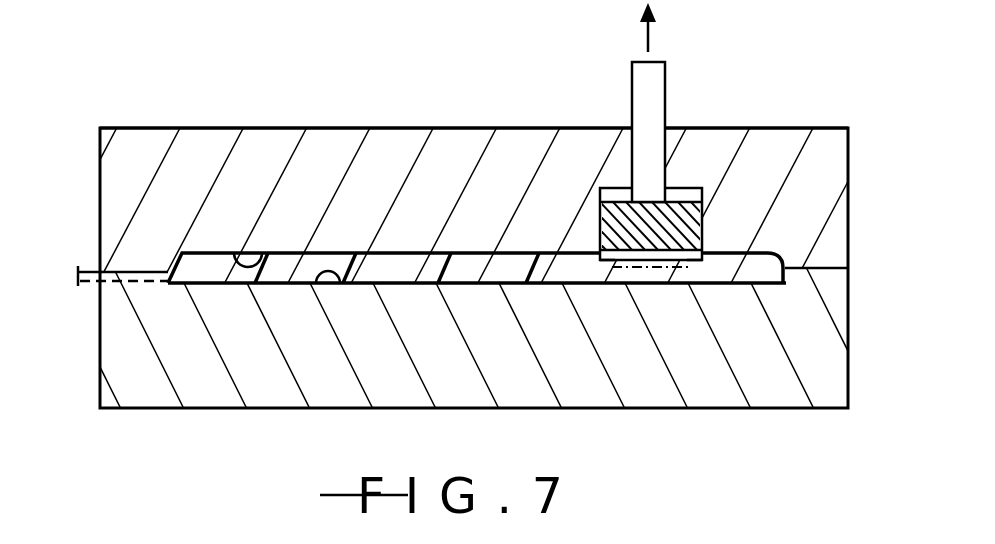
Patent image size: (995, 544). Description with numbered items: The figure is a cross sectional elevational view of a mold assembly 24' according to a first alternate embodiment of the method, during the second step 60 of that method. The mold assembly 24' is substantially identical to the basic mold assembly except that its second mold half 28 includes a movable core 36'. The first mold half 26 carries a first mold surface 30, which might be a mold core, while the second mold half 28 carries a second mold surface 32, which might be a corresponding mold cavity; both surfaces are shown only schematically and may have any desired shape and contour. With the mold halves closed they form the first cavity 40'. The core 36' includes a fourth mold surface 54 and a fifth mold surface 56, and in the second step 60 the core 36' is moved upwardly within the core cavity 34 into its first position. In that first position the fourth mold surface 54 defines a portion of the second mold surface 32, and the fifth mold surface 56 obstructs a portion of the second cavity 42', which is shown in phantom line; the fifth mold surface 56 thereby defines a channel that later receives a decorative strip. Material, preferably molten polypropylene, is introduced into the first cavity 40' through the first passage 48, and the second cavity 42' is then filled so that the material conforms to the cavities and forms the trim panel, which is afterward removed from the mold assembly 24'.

The second step 60 is at (139, 40).
The second mold half 28 is at (146, 150).
The first mold half 26 is at (206, 390).
The mold assembly 24' is at (474, 97).
The second mold surface 32 is at (263, 252).
The first mold surface 30 is at (338, 283).
The first cavity 40' is at (477, 296).
The second cavity 42' is at (654, 303).
The first passage 48 is at (92, 283).
The fourth mold surface 54 is at (600, 254).
The fifth mold surface 56 is at (700, 270).
The core 36' is at (711, 170).
The core cavity 34 is at (680, 190).